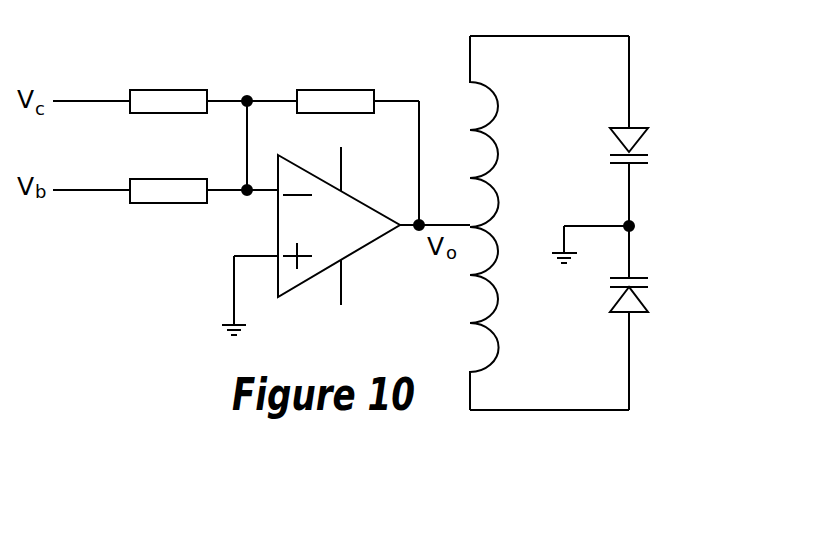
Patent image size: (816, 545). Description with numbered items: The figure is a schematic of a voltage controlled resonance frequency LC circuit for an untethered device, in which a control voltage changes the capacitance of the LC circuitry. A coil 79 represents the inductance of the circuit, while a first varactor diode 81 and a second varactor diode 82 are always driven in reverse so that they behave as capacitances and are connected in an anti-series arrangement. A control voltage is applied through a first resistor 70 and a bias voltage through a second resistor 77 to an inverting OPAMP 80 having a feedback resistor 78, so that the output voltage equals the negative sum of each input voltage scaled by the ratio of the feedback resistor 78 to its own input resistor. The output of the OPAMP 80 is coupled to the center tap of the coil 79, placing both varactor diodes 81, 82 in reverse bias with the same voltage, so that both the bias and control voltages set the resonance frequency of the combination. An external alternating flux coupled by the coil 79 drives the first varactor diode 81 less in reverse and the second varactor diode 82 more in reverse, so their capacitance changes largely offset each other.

The resistor R1 70 is at (145, 114).
The resistor R2 77 is at (145, 203).
The resistor R3 78 is at (320, 114).
The OPAMP 80 is at (300, 284).
The coil 79 is at (497, 300).
The varactor diode C1 81 is at (640, 164).
The varactor diode C2 82 is at (635, 278).